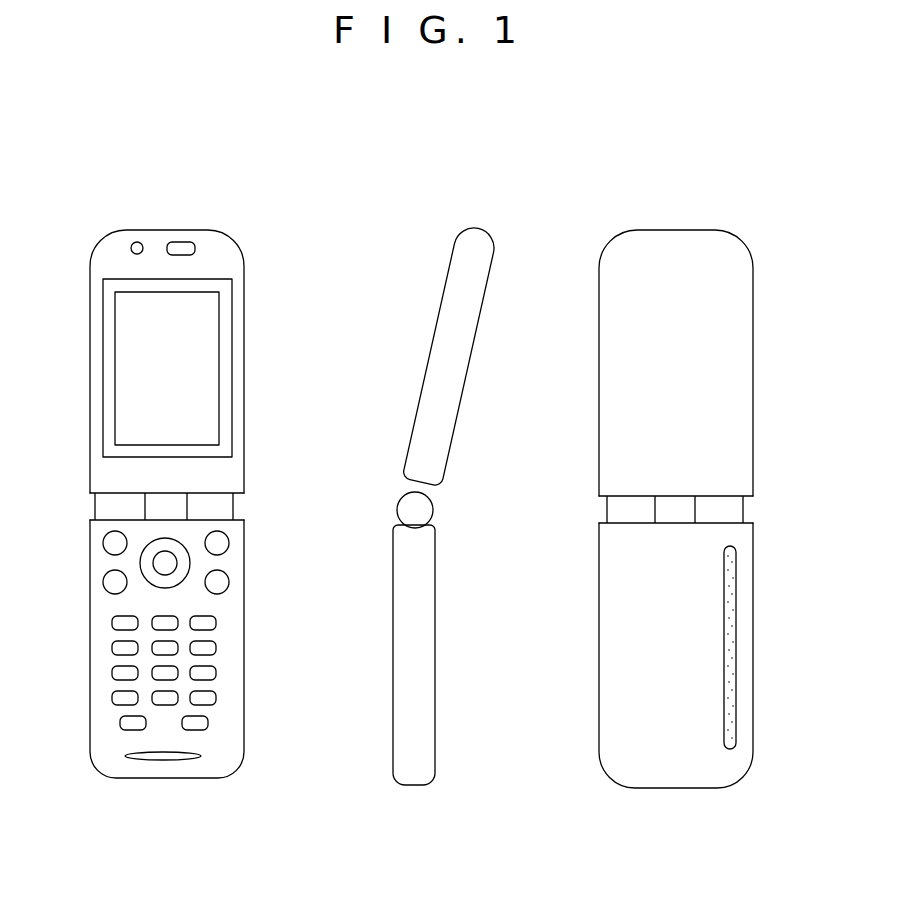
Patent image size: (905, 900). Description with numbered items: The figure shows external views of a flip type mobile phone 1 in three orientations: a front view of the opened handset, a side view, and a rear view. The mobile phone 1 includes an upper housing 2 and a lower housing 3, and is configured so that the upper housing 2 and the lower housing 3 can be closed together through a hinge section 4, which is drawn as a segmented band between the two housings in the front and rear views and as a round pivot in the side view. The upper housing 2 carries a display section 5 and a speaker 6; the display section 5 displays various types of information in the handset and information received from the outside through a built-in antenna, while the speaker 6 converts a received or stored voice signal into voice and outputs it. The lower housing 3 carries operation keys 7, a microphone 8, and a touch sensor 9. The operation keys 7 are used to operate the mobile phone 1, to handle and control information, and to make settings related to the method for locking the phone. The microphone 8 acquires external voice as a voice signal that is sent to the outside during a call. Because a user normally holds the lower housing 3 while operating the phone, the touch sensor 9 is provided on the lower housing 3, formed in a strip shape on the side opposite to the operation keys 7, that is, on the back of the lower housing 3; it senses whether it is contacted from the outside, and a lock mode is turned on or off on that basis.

The mobile phone 1 is at (688, 125).
The upper housing 2 is at (90, 383).
The lower housing 3 is at (90, 617).
The hinge section 4 is at (90, 504).
The display section 5 is at (185, 241).
The speaker 6 is at (232, 331).
The operation keys 7 is at (216, 623).
The microphone 8 is at (165, 760).
The touch sensor 9 is at (736, 697).